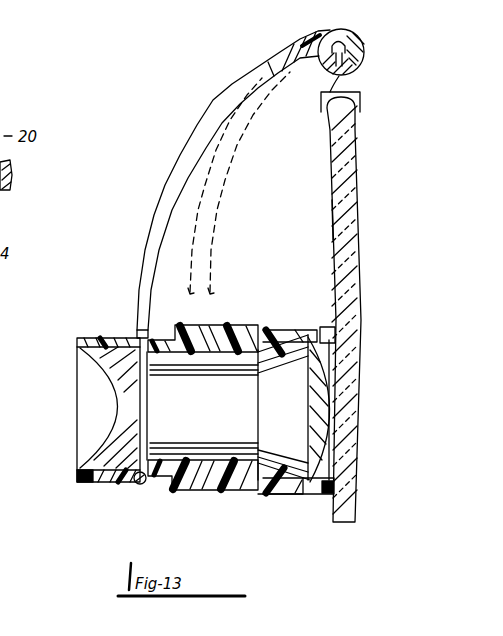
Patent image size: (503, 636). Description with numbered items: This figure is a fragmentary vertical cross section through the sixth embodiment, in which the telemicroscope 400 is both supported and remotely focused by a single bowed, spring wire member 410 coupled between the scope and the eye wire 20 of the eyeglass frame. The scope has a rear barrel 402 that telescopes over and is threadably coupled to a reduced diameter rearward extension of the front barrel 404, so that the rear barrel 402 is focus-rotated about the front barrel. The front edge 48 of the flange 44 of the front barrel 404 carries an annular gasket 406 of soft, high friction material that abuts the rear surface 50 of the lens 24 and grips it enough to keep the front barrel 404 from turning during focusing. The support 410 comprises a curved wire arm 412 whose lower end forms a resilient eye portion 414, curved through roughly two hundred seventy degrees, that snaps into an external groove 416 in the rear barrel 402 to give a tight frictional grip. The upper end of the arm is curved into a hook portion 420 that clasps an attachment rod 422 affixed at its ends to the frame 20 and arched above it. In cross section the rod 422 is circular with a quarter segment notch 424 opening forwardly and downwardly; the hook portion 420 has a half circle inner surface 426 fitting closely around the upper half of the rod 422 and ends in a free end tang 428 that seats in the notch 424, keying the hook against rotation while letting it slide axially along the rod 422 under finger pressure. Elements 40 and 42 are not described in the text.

The eye wire 20 is at (357, 100).
The left hand lens 24 is at (352, 231).
The lens 40 is at (308, 409).
The lens 42 is at (90, 366).
The flange 44 is at (336, 325).
The front edge 48 is at (330, 490).
The rear surface 50 is at (333, 203).
The telemicroscope 400 is at (74, 426).
The rear barrel 402 is at (96, 488).
The front barrel 404 is at (266, 498).
The annular gasket 406 is at (357, 324).
The bowed spring wire member 410 is at (177, 128).
The curved wire arm 412 is at (222, 95).
The resilient eye portion 414 is at (139, 484).
The external groove 416 is at (138, 328).
The hook portion 420 is at (382, 10).
The attachment rod 422 is at (318, 74).
The quarter segment notch 424 is at (357, 73).
The half circle inner surface 426 is at (330, 32).
The free end tang 428 is at (351, 78).